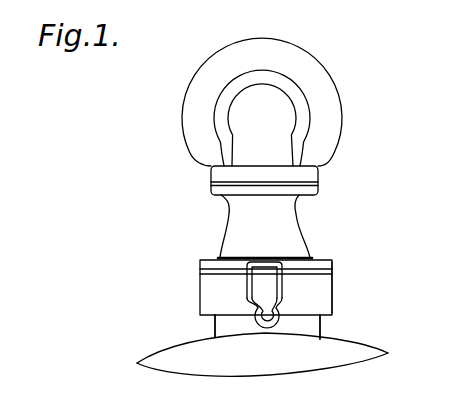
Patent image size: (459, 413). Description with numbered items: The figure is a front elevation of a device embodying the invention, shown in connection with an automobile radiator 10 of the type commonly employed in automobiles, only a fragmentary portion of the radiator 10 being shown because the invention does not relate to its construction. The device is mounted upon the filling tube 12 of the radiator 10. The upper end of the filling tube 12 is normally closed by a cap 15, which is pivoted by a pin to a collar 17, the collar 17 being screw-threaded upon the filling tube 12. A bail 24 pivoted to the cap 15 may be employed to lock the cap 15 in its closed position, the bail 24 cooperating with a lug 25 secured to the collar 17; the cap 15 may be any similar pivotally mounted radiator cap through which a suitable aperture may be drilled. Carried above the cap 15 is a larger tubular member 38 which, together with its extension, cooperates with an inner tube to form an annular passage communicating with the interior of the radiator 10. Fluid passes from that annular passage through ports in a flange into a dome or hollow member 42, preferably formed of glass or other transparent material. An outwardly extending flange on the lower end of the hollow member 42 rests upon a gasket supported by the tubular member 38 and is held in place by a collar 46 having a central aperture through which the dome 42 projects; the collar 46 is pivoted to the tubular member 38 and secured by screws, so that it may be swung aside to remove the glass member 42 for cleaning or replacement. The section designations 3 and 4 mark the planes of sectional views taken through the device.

The section line 3- 3 is at (269, 18).
The section line 4- 4 is at (168, 188).
The radiator 10 is at (348, 349).
The filling tube 12 is at (320, 331).
The cap 15 is at (322, 258).
The collar 17 is at (331, 293).
The bail 24 is at (248, 288).
The lug 25 is at (280, 292).
The tubular member 38 is at (297, 235).
The dome or hollow member 42 is at (268, 81).
The collar 46 is at (307, 173).